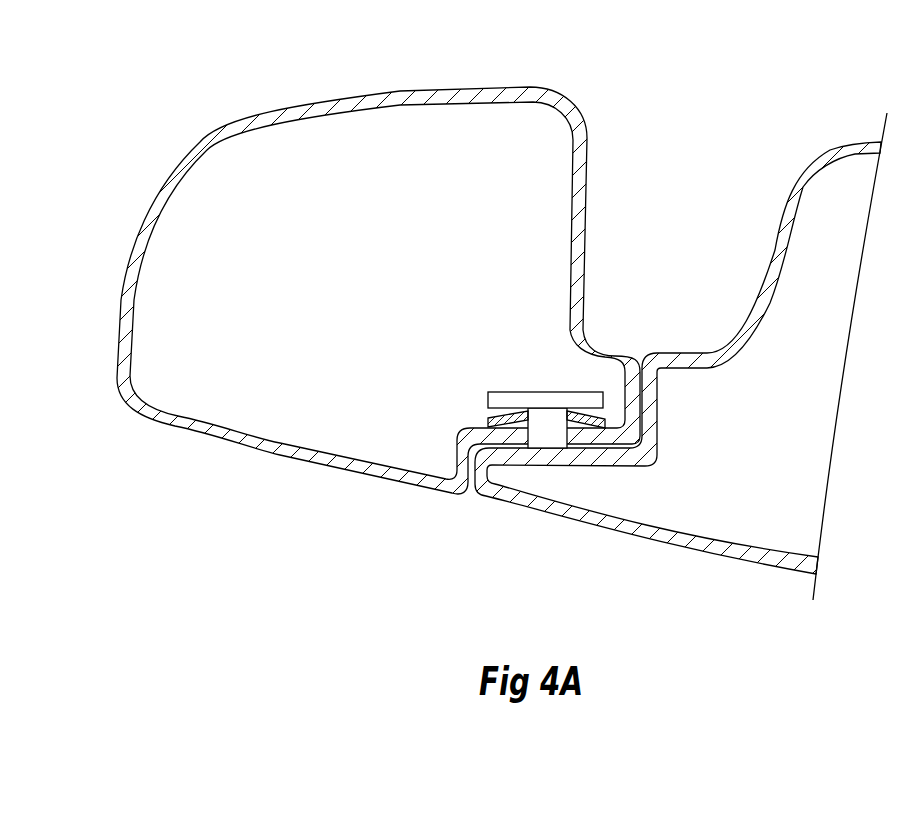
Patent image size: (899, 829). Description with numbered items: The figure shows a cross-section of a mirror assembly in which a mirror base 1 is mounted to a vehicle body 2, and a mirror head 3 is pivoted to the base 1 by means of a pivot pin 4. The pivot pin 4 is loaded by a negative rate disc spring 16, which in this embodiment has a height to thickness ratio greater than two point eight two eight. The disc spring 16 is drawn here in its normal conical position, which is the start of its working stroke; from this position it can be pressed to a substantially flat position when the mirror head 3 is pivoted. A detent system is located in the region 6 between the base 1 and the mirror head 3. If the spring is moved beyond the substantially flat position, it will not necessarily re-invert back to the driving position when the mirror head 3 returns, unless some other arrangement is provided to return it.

The mirror base 1 is at (775, 247).
The vehicle body 2 is at (871, 397).
The mirror head 3 is at (227, 137).
The pivot pin 4 is at (542, 398).
The region 6 is at (502, 443).
The disc spring 16 is at (490, 412).